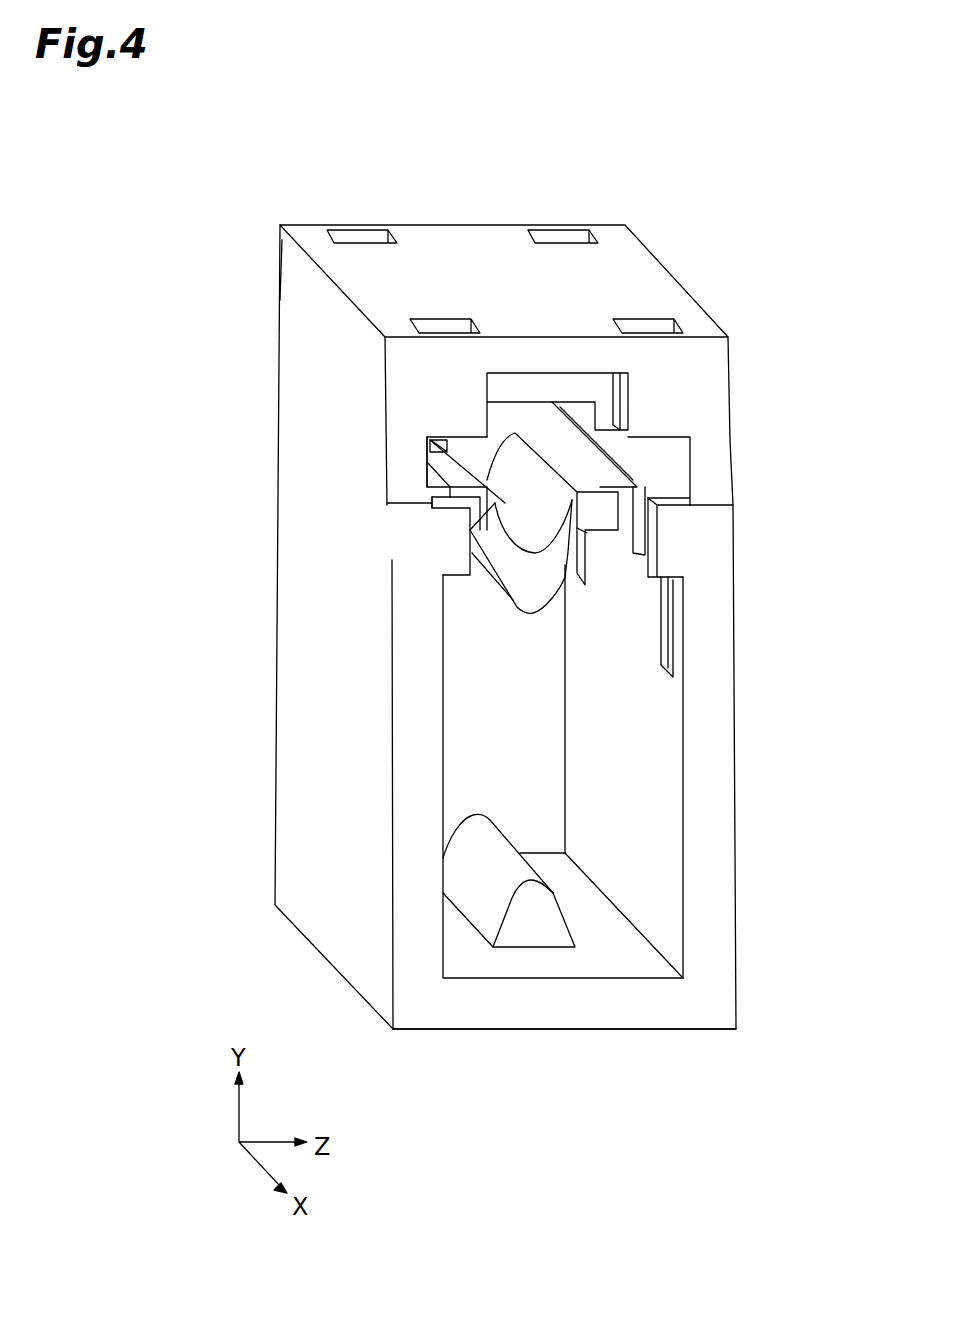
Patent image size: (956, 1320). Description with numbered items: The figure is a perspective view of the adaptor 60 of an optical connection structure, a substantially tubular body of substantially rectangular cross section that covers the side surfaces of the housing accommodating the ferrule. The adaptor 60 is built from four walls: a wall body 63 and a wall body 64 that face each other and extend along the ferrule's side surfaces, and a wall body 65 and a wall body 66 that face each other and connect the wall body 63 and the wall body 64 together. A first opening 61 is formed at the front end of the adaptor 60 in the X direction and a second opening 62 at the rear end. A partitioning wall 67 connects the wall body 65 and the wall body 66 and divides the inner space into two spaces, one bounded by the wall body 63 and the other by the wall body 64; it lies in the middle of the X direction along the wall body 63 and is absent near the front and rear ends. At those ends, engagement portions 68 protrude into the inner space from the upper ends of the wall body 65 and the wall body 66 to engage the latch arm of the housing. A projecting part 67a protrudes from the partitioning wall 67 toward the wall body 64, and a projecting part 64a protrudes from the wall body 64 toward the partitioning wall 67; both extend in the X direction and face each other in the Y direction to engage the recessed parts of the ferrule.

The adaptor 60 is at (652, 193).
The first opening 61 is at (665, 785).
The second opening 62 is at (556, 674).
The wall body 63 is at (478, 265).
The wall body 64 is at (572, 1020).
The projecting part 64a is at (537, 898).
The wall body 65 is at (735, 715).
The wall body 66 is at (330, 730).
The partitioning wall 67 is at (580, 470).
The projecting part 67a is at (540, 596).
The engagement portions 68 is at (430, 462).